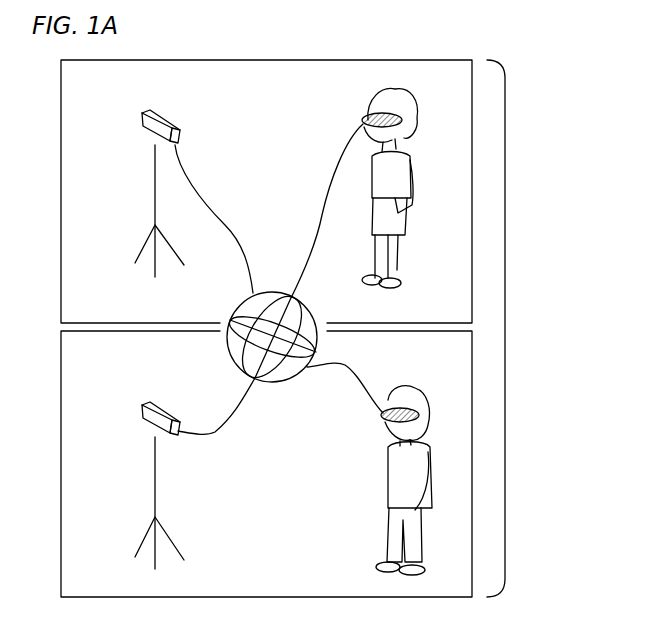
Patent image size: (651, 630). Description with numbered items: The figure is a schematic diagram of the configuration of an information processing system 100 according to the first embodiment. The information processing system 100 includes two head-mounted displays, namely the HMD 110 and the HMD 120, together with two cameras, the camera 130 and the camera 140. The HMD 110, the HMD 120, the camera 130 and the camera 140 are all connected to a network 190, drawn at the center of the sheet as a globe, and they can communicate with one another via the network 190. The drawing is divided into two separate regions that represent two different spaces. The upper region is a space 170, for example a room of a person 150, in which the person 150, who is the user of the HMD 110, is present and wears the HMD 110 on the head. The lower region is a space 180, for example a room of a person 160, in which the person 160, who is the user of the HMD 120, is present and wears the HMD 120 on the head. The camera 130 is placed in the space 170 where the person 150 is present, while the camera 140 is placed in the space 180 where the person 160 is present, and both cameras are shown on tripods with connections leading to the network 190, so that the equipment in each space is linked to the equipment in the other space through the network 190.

The information processing system 100 is at (505, 328).
The head-mounted display 110 is at (365, 118).
The head-mounted display 120 is at (382, 418).
The camera 130 is at (165, 113).
The camera 140 is at (160, 408).
The person 150 is at (414, 97).
The person 160 is at (405, 388).
The space 170 is at (472, 170).
The space 180 is at (473, 470).
The network 190 is at (262, 293).